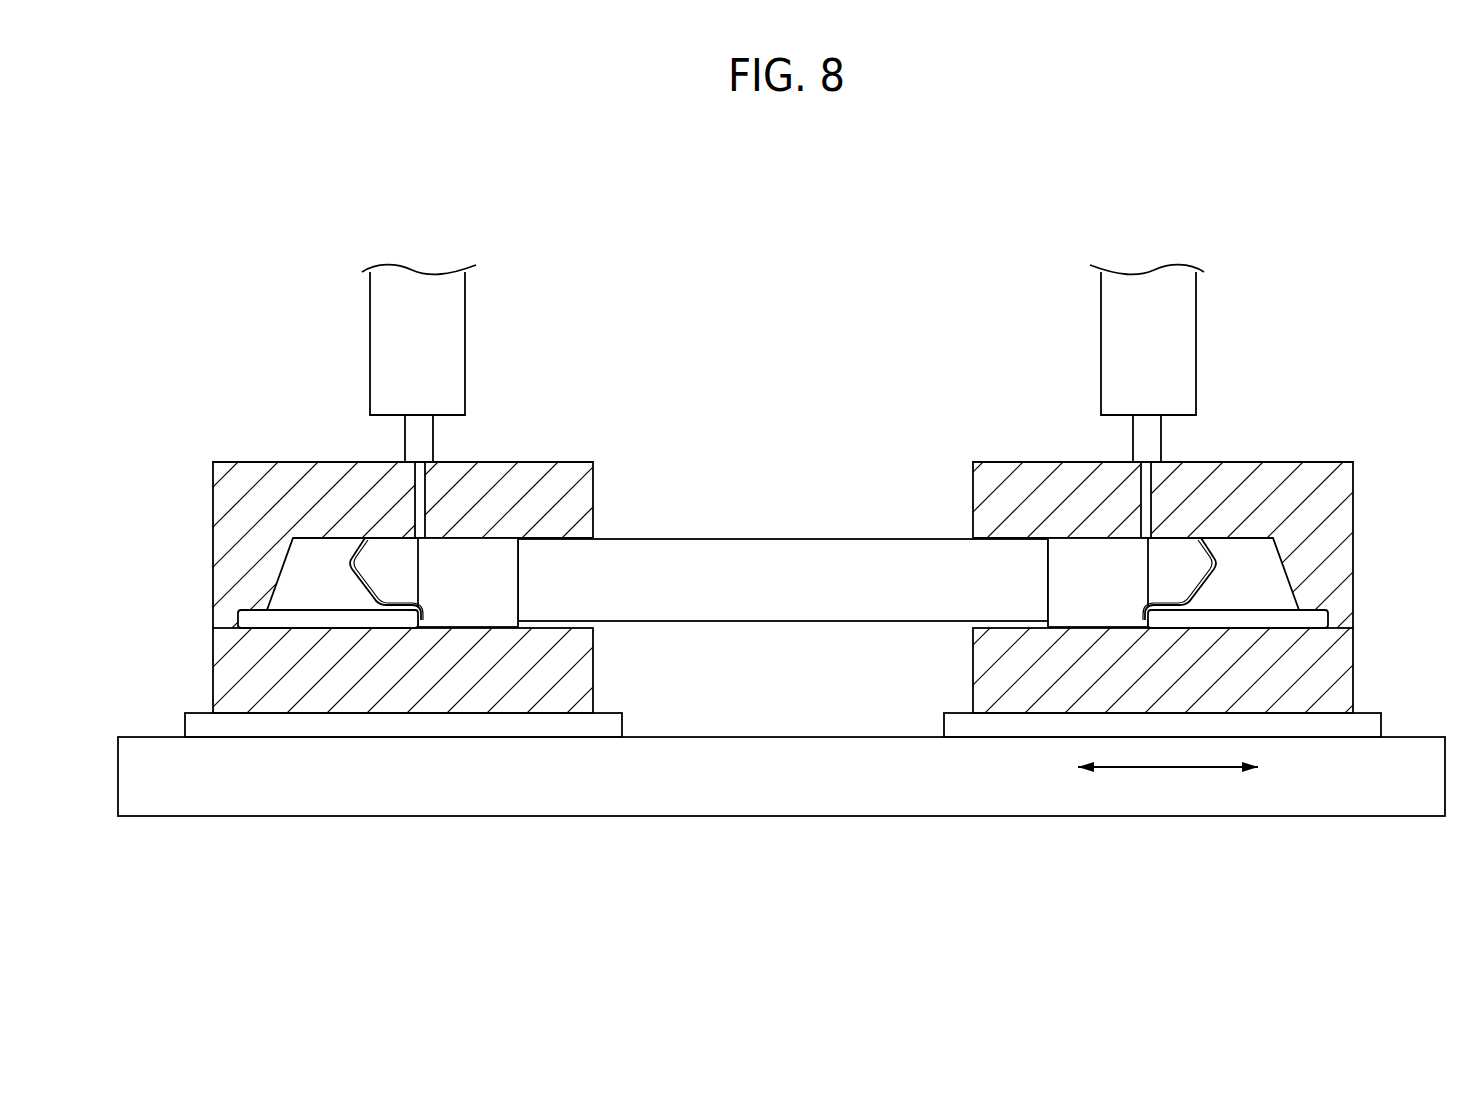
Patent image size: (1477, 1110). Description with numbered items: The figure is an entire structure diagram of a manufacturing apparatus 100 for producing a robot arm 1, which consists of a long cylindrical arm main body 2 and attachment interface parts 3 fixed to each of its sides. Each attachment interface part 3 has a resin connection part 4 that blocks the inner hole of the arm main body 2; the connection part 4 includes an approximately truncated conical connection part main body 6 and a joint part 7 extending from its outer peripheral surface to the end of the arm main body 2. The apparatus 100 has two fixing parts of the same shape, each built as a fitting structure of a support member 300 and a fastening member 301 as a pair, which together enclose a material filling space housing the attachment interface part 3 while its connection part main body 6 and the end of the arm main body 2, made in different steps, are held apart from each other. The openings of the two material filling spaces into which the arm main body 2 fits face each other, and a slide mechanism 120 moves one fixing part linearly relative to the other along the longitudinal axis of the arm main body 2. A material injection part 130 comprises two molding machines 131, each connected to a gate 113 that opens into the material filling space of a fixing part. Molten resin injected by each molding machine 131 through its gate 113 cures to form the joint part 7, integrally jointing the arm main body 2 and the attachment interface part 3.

The manufacturing apparatus 100 is at (1172, 205).
The robot arm 1 is at (874, 372).
The arm main body 2 is at (801, 537).
The attachment interface part 3 is at (331, 514).
The connection part 4 is at (292, 572).
The connection part main body 6 is at (300, 548).
The joint part 7 is at (475, 605).
The gate 113 is at (418, 468).
The slide mechanism 120 is at (1382, 708).
The material injection part 130 is at (1220, 363).
The molding machine 131 is at (443, 371).
The support member 300 is at (210, 660).
The fastening member 301 is at (771, 488).